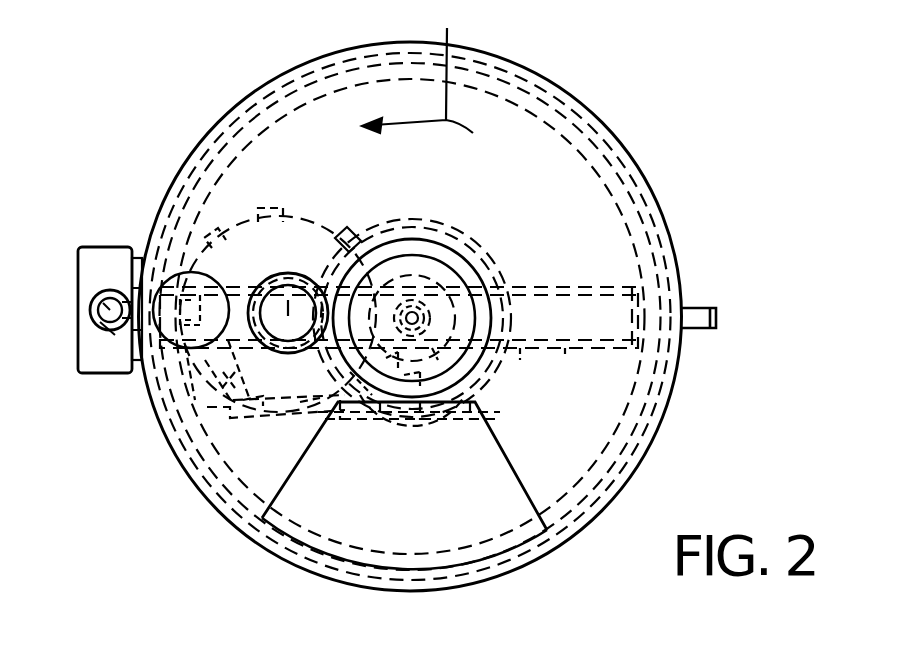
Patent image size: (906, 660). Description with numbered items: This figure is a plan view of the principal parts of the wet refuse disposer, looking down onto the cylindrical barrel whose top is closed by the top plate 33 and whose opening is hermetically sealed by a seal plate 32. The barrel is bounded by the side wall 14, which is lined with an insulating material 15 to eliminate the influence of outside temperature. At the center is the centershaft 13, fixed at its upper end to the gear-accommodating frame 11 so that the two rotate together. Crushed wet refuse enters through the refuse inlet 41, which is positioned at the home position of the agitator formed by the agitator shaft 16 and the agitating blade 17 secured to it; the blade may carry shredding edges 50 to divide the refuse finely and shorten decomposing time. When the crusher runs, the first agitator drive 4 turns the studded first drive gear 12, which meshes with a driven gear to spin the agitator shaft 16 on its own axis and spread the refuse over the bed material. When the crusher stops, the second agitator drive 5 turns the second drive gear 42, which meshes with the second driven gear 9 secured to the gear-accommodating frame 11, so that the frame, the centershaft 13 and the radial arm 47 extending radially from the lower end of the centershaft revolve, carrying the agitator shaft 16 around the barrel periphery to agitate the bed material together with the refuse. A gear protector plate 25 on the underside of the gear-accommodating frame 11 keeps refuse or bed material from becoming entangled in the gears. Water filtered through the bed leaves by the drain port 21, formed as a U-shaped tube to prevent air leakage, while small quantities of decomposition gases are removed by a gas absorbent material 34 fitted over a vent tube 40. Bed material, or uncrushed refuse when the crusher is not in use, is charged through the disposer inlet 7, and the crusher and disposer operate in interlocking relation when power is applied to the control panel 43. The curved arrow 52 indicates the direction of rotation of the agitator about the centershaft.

The first agitator drive 4 is at (437, 277).
The second agitator drive 5 is at (285, 277).
The disposer inlet 7 is at (468, 449).
The second driven gear 9 is at (515, 352).
The gear-accommodating frame 11 is at (565, 350).
The first drive gear 12 is at (490, 390).
The centershaft 13 is at (421, 410).
The side wall 14 is at (542, 560).
The insulating material 15 is at (245, 512).
The agitator shaft 16 is at (262, 352).
The agitating blade 17 is at (276, 424).
The drain port 21 is at (707, 308).
The gear protector plate 25 is at (172, 412).
The seal plate 32 is at (388, 410).
The top plate 33 is at (230, 192).
The gas absorbent material 34 is at (215, 277).
The vent tube 40 is at (149, 372).
The refuse inlet 41 is at (92, 303).
The second drive gear 42 is at (398, 222).
The control panel 43 is at (94, 344).
The radial arm 47 is at (546, 290).
The shredding edges 50 is at (287, 418).
The rotation direction 52 is at (417, 66).